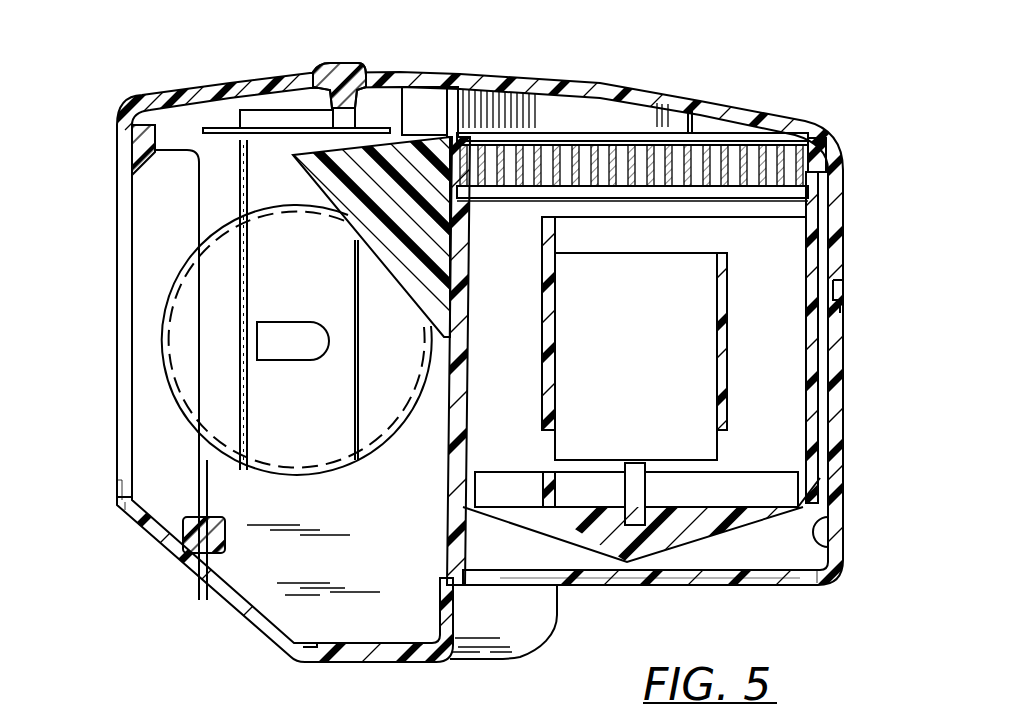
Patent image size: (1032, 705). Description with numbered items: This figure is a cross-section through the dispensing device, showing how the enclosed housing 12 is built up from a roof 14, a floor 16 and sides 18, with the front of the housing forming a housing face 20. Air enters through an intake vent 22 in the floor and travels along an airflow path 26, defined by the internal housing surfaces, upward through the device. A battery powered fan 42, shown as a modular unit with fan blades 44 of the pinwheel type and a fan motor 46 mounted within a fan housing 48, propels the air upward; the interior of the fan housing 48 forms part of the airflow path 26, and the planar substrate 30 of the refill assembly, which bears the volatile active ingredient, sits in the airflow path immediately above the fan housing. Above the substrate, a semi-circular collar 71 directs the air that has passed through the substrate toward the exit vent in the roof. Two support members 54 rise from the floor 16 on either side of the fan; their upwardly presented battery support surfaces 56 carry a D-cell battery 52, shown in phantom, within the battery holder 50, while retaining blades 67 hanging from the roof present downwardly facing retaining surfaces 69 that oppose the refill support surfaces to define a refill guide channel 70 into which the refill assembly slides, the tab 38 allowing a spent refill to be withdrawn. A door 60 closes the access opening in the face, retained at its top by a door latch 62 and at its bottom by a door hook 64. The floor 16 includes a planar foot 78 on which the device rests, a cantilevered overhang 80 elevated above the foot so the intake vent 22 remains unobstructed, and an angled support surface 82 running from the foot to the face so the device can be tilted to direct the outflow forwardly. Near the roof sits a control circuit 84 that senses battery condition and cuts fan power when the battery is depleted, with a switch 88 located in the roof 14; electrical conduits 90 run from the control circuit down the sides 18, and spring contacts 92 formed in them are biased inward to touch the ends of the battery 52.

The housing 12 is at (843, 170).
The roof 14 is at (518, 85).
The floor 16 is at (503, 585).
The sides 18 is at (840, 328).
The housing face 20 is at (117, 330).
The intake vent 22 is at (742, 586).
The airflow path 26 is at (828, 522).
The substrate 30 is at (736, 150).
The tab 38 is at (296, 155).
The fan 42 is at (818, 262).
The fan blades 44 is at (523, 512).
The fan motor 46 is at (690, 387).
The fan housing 48 is at (822, 218).
The battery holder 50 is at (225, 472).
The battery 52 is at (163, 365).
The support members 54 is at (255, 577).
The battery support surfaces 56 is at (268, 462).
The door 60 is at (113, 490).
The door latch 62 is at (127, 147).
The door hook 64 is at (200, 558).
The retaining blades 67 is at (412, 100).
The retaining surfaces 69 is at (438, 125).
The refill guide channel 70 is at (673, 135).
The semi-circular collar 71 is at (642, 115).
The foot 78 is at (395, 662).
The cantilevered overhang 80 is at (816, 586).
The angled support surface 82 is at (258, 632).
The control circuit 84 is at (277, 112).
The switch 88 is at (350, 63).
The electrical conduits 90 is at (257, 168).
The spring contacts 92 is at (302, 333).